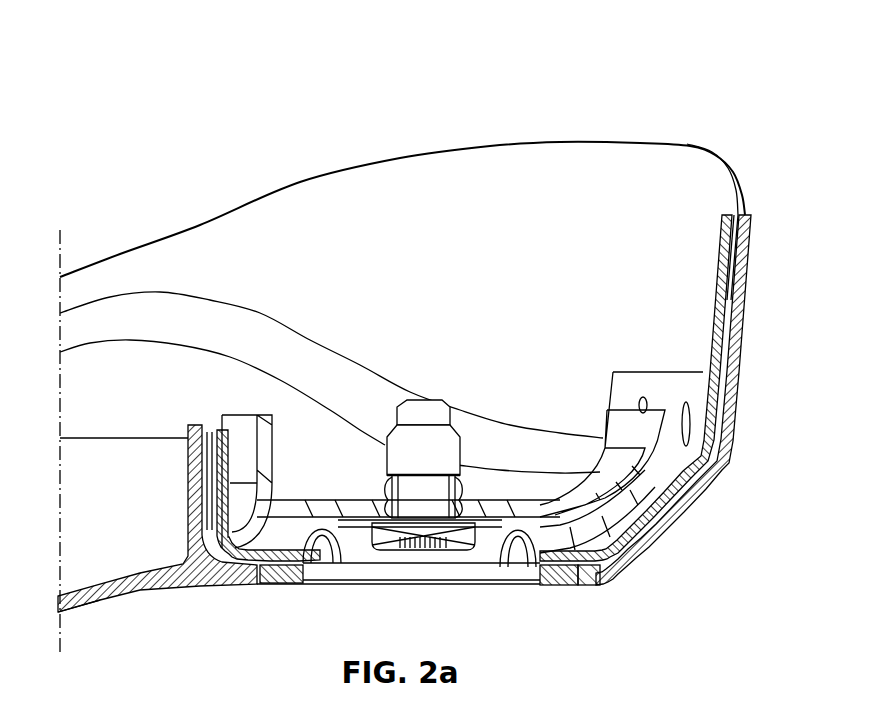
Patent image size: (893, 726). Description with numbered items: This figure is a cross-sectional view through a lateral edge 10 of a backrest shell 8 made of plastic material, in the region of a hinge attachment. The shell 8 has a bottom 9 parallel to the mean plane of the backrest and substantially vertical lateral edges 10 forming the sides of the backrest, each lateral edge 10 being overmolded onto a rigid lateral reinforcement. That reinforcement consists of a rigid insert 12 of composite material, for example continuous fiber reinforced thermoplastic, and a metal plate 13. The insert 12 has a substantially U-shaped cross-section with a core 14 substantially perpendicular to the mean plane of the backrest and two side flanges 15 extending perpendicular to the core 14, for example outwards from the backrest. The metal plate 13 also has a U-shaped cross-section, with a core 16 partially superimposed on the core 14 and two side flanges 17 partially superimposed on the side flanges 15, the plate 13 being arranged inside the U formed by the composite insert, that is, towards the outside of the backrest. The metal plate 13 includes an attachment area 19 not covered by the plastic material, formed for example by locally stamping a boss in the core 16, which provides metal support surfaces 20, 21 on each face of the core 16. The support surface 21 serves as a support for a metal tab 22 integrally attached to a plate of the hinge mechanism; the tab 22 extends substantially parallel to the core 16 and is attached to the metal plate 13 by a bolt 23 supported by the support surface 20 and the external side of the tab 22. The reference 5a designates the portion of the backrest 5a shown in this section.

The vehicle body panel 5a is at (615, 108).
The shell 8 is at (132, 605).
The bottom 9 is at (83, 604).
The lateral edges 10 is at (556, 578).
The rigid insert 12 is at (645, 569).
The metal plate 13 is at (723, 389).
The core 14 is at (593, 574).
The side flanges 15 is at (733, 270).
The core 16 is at (274, 587).
The side flanges 17 is at (709, 414).
The attachment areas 19 is at (504, 534).
The metal support surfaces 20 is at (351, 526).
The metal support surfaces 21 is at (480, 508).
The metal tabs 22 is at (290, 510).
The bolts 23 is at (427, 440).